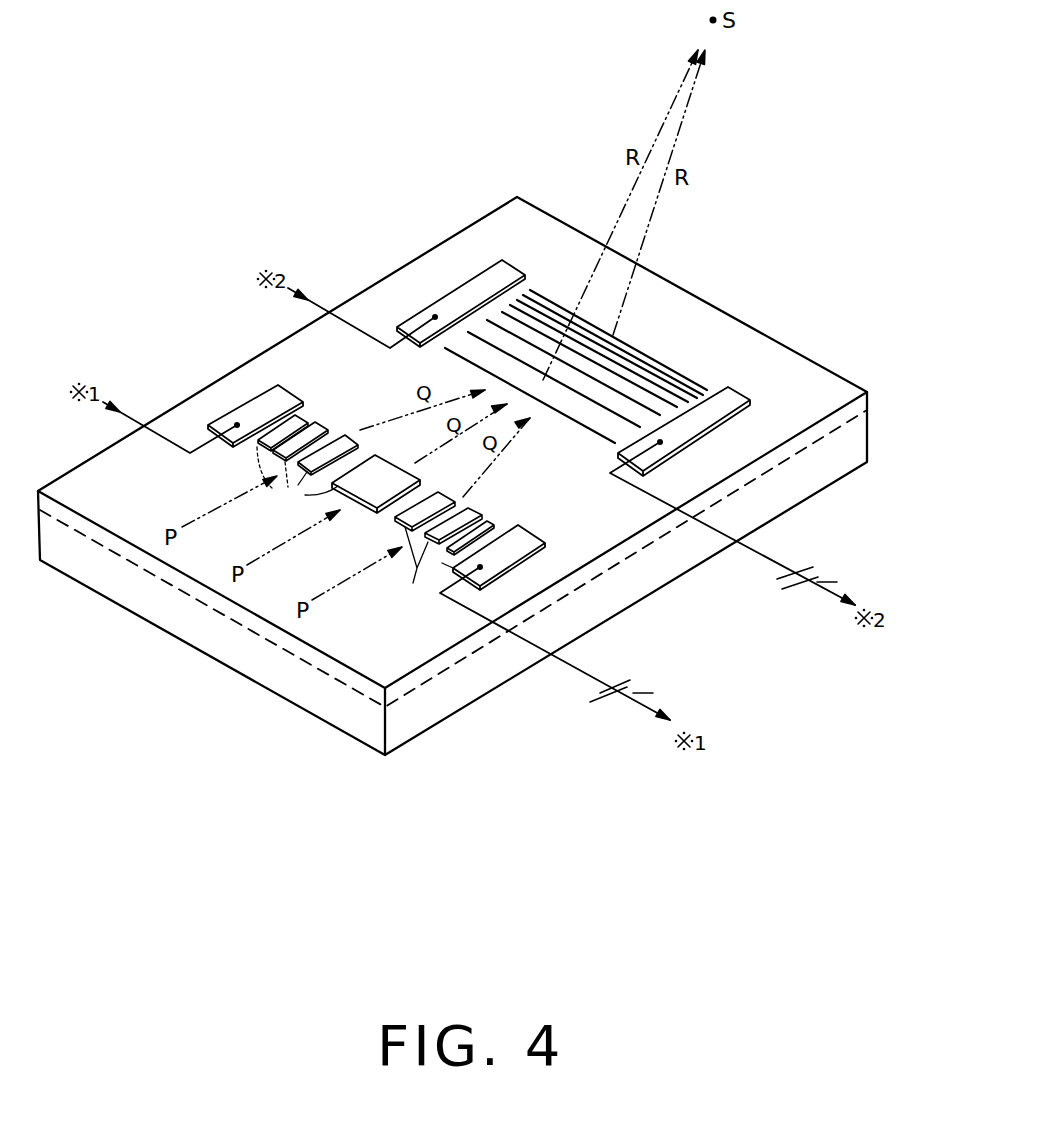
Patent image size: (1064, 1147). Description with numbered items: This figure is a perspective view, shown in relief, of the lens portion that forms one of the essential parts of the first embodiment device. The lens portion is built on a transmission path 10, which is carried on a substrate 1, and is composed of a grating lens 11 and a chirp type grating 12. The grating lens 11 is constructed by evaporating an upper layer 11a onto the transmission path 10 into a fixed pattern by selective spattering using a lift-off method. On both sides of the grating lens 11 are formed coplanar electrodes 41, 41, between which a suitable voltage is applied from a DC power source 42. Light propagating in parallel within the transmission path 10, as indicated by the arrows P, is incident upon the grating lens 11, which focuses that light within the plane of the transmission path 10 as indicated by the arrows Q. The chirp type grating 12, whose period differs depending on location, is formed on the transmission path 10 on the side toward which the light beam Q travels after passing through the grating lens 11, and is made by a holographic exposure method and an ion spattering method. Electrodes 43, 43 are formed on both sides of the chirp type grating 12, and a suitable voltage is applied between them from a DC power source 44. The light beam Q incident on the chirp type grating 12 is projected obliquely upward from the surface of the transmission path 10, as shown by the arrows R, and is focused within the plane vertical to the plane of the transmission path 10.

The substrate 1 is at (440, 700).
The transmission path 10 is at (347, 677).
The grating lens 11 is at (384, 452).
The upper layer 11a is at (372, 523).
The chirp type grating 12 is at (647, 384).
The electrodes 41 is at (280, 393).
The DC power source 42 is at (630, 683).
The electrodes 43 is at (487, 278).
The DC power source 44 is at (810, 575).